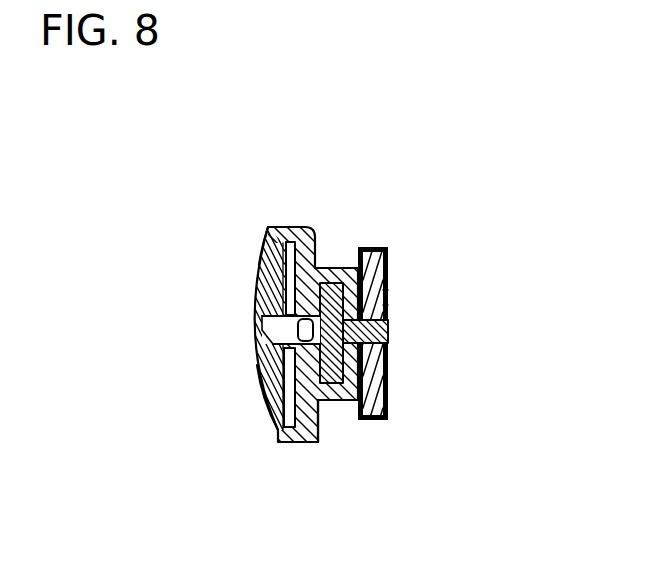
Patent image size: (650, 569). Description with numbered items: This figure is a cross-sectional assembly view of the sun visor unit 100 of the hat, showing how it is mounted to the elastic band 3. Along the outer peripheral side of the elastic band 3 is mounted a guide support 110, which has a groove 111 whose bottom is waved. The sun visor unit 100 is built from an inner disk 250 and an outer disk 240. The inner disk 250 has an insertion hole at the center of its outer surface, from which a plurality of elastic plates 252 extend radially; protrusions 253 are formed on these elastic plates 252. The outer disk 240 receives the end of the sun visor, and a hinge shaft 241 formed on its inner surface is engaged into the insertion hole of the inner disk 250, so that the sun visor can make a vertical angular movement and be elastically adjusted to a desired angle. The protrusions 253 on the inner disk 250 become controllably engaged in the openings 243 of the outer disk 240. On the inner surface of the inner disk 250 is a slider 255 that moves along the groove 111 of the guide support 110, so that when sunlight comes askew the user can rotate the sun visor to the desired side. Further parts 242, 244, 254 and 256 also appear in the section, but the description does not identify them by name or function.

The sun visor unit 100 is at (198, 256).
The inner disk 250 is at (307, 216).
The protrusions 253 is at (287, 243).
The openings 243 is at (264, 256).
The elastic plates 252 is at (321, 280).
The screw nut 256 is at (351, 252).
The groove 111 is at (387, 297).
The guide support 110 is at (387, 320).
The elastic band 3 is at (387, 383).
The spring member 254 is at (290, 318).
The hinge shaft 241 is at (257, 324).
The lens lower edge portion 244 is at (270, 334).
The lower holding bar 242 is at (280, 349).
The outer disk 240 is at (264, 430).
The slider 255 is at (337, 407).